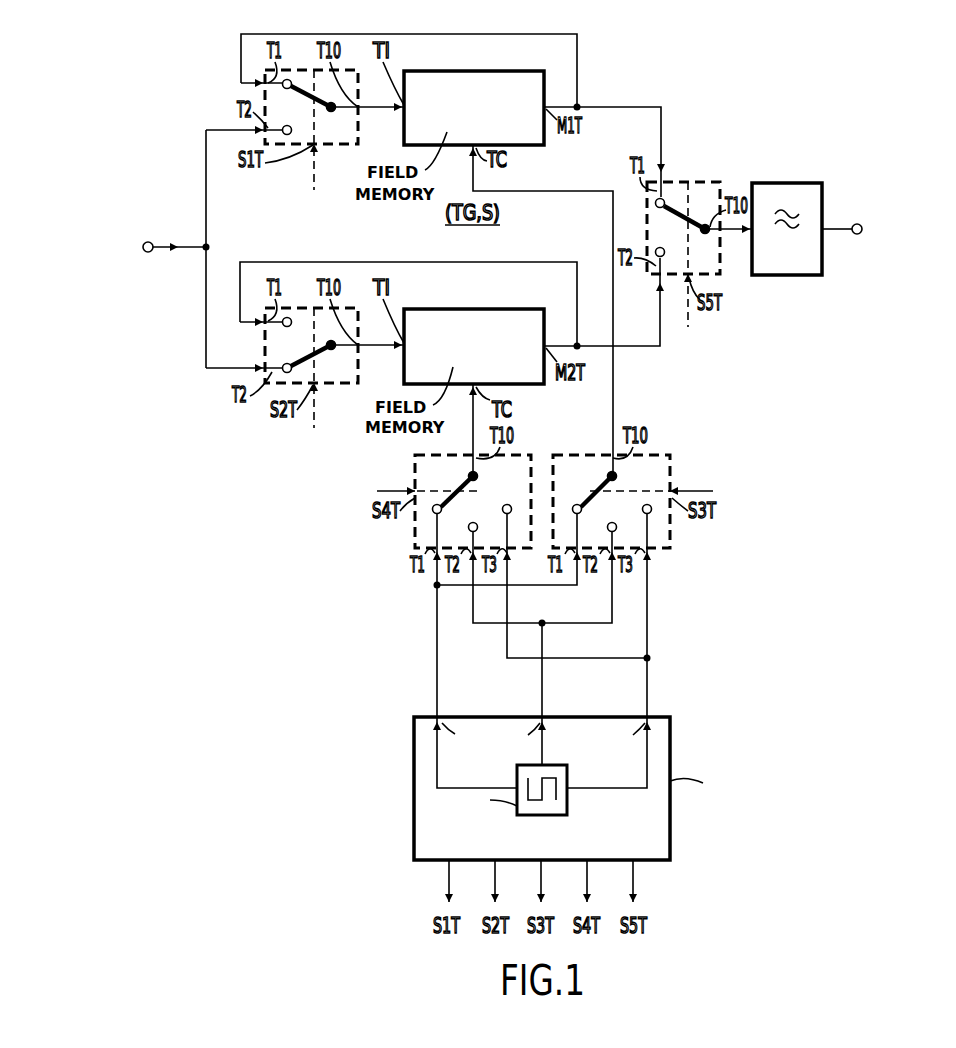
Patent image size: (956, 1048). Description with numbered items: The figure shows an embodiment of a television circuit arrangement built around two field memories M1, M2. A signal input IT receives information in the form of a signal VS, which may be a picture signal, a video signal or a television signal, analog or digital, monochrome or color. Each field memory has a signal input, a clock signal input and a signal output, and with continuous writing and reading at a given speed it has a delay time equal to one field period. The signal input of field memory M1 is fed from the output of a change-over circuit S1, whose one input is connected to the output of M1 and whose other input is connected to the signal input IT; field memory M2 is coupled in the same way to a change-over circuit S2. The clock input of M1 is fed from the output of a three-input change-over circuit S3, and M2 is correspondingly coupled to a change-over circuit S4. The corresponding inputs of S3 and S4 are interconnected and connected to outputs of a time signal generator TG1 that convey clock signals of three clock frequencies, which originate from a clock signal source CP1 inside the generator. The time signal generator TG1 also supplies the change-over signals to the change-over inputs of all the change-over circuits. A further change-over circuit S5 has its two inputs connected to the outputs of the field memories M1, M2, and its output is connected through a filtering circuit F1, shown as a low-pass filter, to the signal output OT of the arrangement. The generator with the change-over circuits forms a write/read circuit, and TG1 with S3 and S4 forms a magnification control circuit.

The signal input IT is at (154, 251).
The signal output OT is at (855, 223).
The signal VS is at (176, 243).
The change-over circuit S1 is at (352, 150).
The change-over circuit S2 is at (350, 400).
The change-over circuit S3 is at (671, 541).
The change-over circuit S4 is at (415, 531).
The change-over circuit S5 is at (674, 178).
The field memory M1 is at (464, 71).
The field memory M2 is at (447, 309).
The filtering circuit F1 is at (787, 229).
The time signal generator TG1 is at (414, 831).
The clock signal source CP1 is at (567, 800).